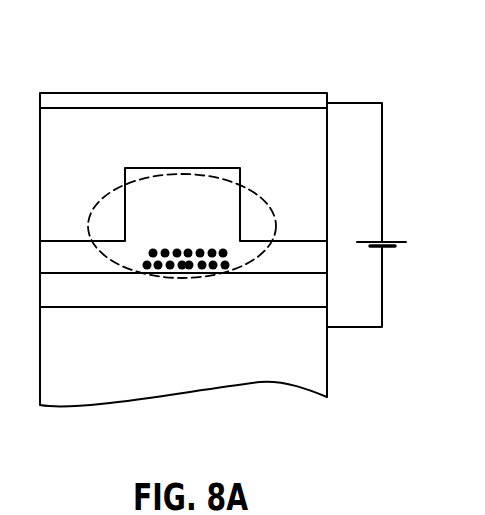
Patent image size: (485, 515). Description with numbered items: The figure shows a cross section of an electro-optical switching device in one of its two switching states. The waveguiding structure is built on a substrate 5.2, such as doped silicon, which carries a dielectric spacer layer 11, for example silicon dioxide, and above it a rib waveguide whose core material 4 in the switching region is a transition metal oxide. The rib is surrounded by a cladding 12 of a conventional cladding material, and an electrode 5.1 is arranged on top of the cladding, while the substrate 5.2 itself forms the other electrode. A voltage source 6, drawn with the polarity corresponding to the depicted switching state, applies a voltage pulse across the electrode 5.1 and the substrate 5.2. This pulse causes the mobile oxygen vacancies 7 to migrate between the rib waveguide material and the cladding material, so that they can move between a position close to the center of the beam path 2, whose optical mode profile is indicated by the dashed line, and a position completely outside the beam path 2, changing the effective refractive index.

The electrode 5.1 is at (158, 113).
The waveguide core material 4 is at (140, 192).
The oxygen vacancies 7 is at (200, 250).
The beam path 2 is at (260, 193).
The cladding 12 is at (310, 143).
The voltage source 6 is at (387, 248).
The dielectric spacer layer 11 is at (63, 290).
The substrate 5.2 is at (205, 363).